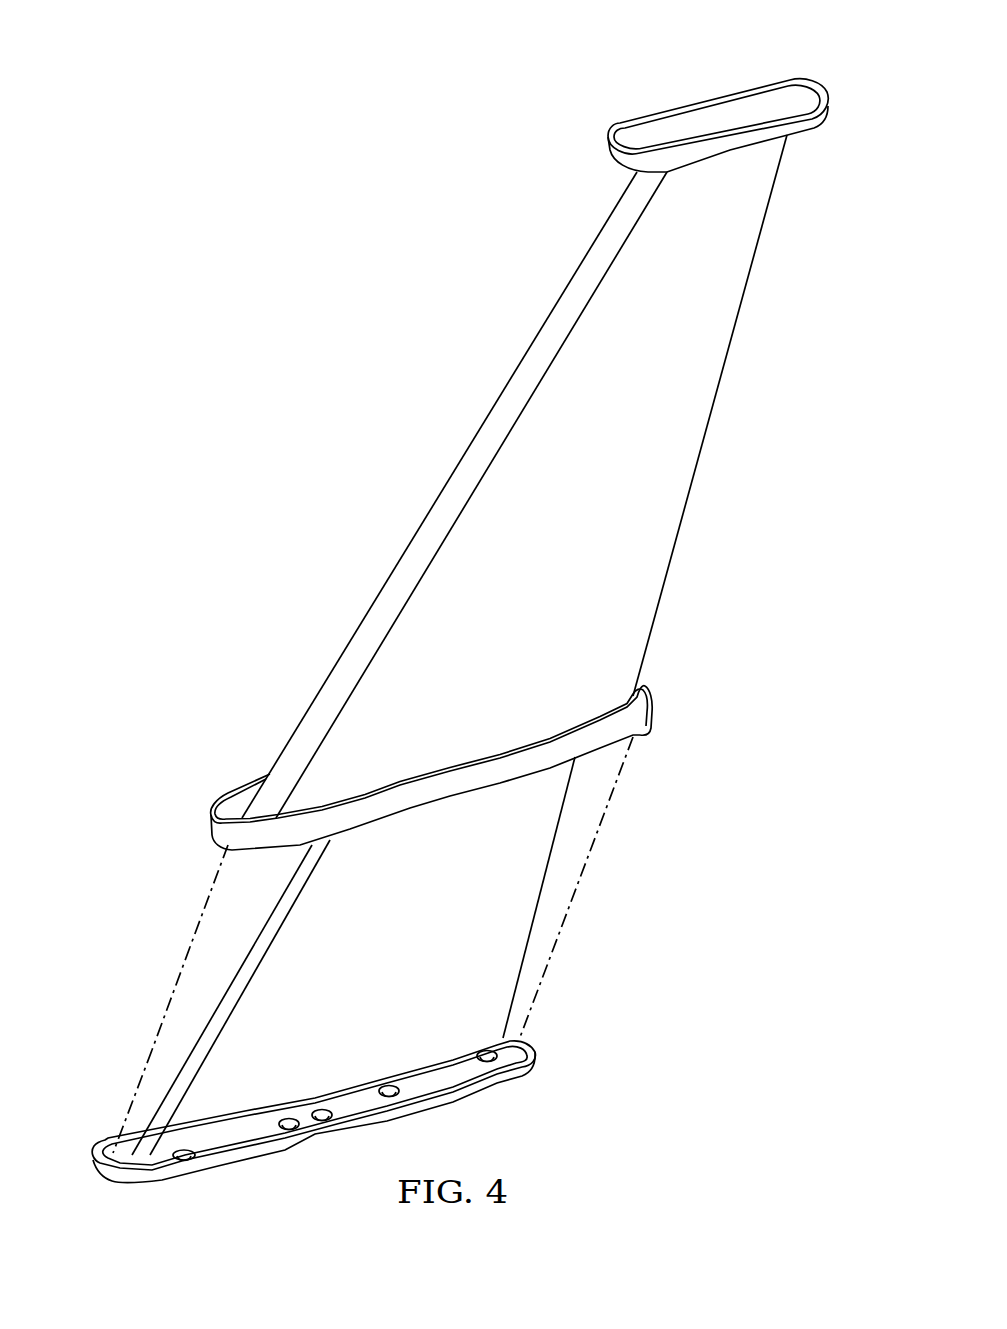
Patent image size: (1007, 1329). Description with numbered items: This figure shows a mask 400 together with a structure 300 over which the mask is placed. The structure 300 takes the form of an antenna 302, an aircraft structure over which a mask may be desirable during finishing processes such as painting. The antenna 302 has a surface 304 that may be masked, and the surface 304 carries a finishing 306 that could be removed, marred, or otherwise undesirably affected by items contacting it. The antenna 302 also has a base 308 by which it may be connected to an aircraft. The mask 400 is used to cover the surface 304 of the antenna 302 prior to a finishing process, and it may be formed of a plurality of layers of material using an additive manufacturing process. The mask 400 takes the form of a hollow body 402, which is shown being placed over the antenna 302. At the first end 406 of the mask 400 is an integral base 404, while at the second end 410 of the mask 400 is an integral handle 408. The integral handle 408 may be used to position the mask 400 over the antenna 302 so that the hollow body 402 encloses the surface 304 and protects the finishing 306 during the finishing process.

The structure 300 is at (613, 1008).
The antenna 302 is at (168, 912).
The surface 304 is at (203, 987).
The finishing 306 is at (185, 1030).
The base 308 is at (100, 1137).
The mask 400 is at (370, 272).
The hollow body 402 is at (380, 460).
The integral base 404 is at (229, 779).
The first end 406 is at (655, 753).
The integral handle 408 is at (631, 101).
The second end 410 is at (803, 72).